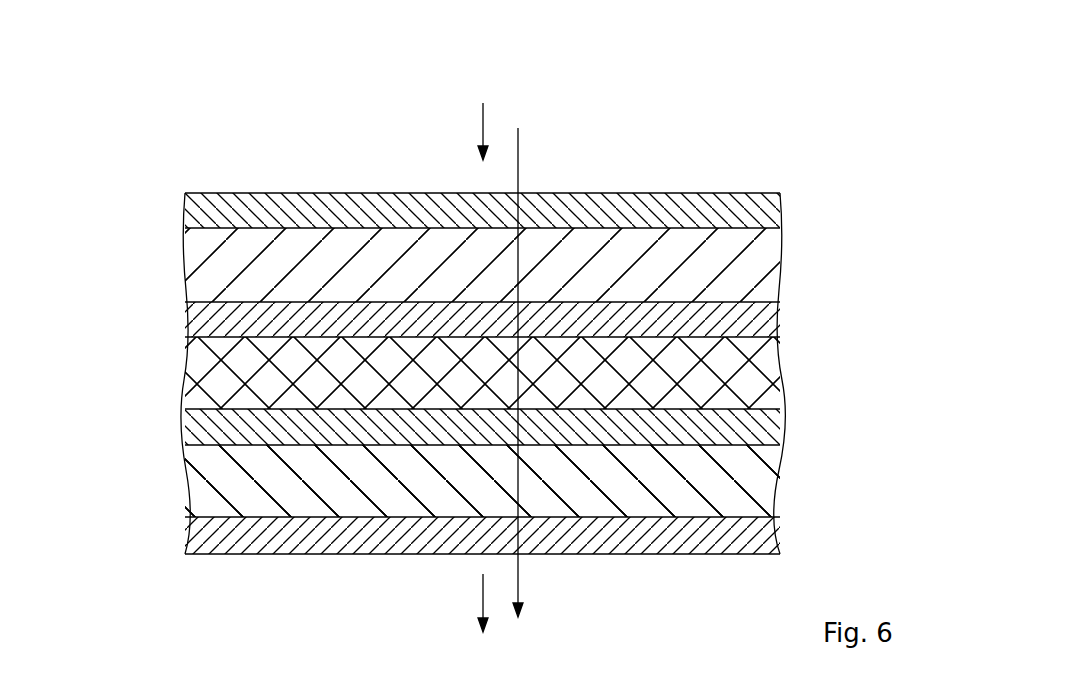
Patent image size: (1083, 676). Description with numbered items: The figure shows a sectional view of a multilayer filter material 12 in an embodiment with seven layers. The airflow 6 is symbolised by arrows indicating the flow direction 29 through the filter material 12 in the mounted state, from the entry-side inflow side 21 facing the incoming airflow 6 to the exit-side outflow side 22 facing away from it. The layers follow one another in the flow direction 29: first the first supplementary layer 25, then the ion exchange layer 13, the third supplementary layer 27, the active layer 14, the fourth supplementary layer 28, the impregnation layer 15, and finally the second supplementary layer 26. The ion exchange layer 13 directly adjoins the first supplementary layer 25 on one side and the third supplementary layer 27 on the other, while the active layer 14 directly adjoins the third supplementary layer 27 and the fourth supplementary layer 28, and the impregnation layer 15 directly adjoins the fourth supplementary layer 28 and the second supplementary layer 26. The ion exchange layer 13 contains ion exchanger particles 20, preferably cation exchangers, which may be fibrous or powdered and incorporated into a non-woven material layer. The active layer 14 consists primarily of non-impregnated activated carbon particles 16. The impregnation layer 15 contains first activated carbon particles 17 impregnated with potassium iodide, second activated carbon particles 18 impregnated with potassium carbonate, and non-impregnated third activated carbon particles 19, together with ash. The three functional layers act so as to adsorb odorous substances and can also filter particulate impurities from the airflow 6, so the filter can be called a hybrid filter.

The airflow 6 is at (480, 122).
The filter material 12 is at (813, 167).
The ion exchange layer 13 is at (173, 262).
The active layer 14 is at (173, 374).
The impregnation layer 15 is at (173, 483).
The non-impregnated activated carbon particles 16 is at (732, 369).
The first activated carbon particles 17 is at (262, 507).
The second activated carbon particles 18 is at (313, 507).
The third activated carbon particles 19 is at (361, 507).
The ion exchanger particles 20 is at (300, 240).
The inflow side 21 is at (646, 186).
The outflow side 22 is at (608, 557).
The first supplementary layer 25 is at (173, 210).
The second supplementary layer 26 is at (173, 537).
The third supplementary layer 27 is at (173, 319).
The fourth supplementary layer 28 is at (173, 425).
The flow direction 29 is at (522, 148).